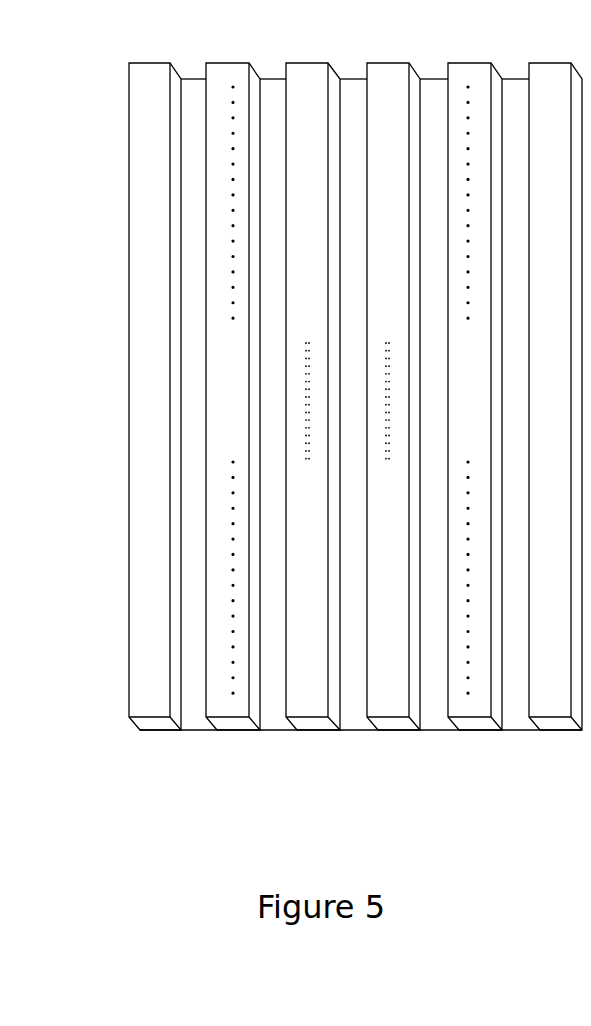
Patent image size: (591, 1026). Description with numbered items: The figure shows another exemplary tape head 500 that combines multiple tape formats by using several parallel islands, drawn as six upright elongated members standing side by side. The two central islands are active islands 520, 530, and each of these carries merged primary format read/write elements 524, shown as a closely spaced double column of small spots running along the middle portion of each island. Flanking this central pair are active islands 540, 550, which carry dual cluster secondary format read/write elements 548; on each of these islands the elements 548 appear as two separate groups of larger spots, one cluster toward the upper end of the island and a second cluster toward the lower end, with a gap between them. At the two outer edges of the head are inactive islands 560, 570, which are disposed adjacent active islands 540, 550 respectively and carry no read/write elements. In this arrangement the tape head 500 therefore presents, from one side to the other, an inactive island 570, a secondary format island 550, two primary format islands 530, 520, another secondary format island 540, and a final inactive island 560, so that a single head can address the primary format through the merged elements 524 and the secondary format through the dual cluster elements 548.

The tape head 500 is at (316, 61).
The inactive island 570 is at (148, 708).
The active island 550 is at (213, 708).
The active island 530 is at (312, 708).
The active island 520 is at (393, 708).
The active island 540 is at (472, 708).
The inactive island 560 is at (548, 708).
The dual cluster secondary format read/write elements 548 is at (226, 200).
The merged primary format read/write elements 524 is at (301, 405).